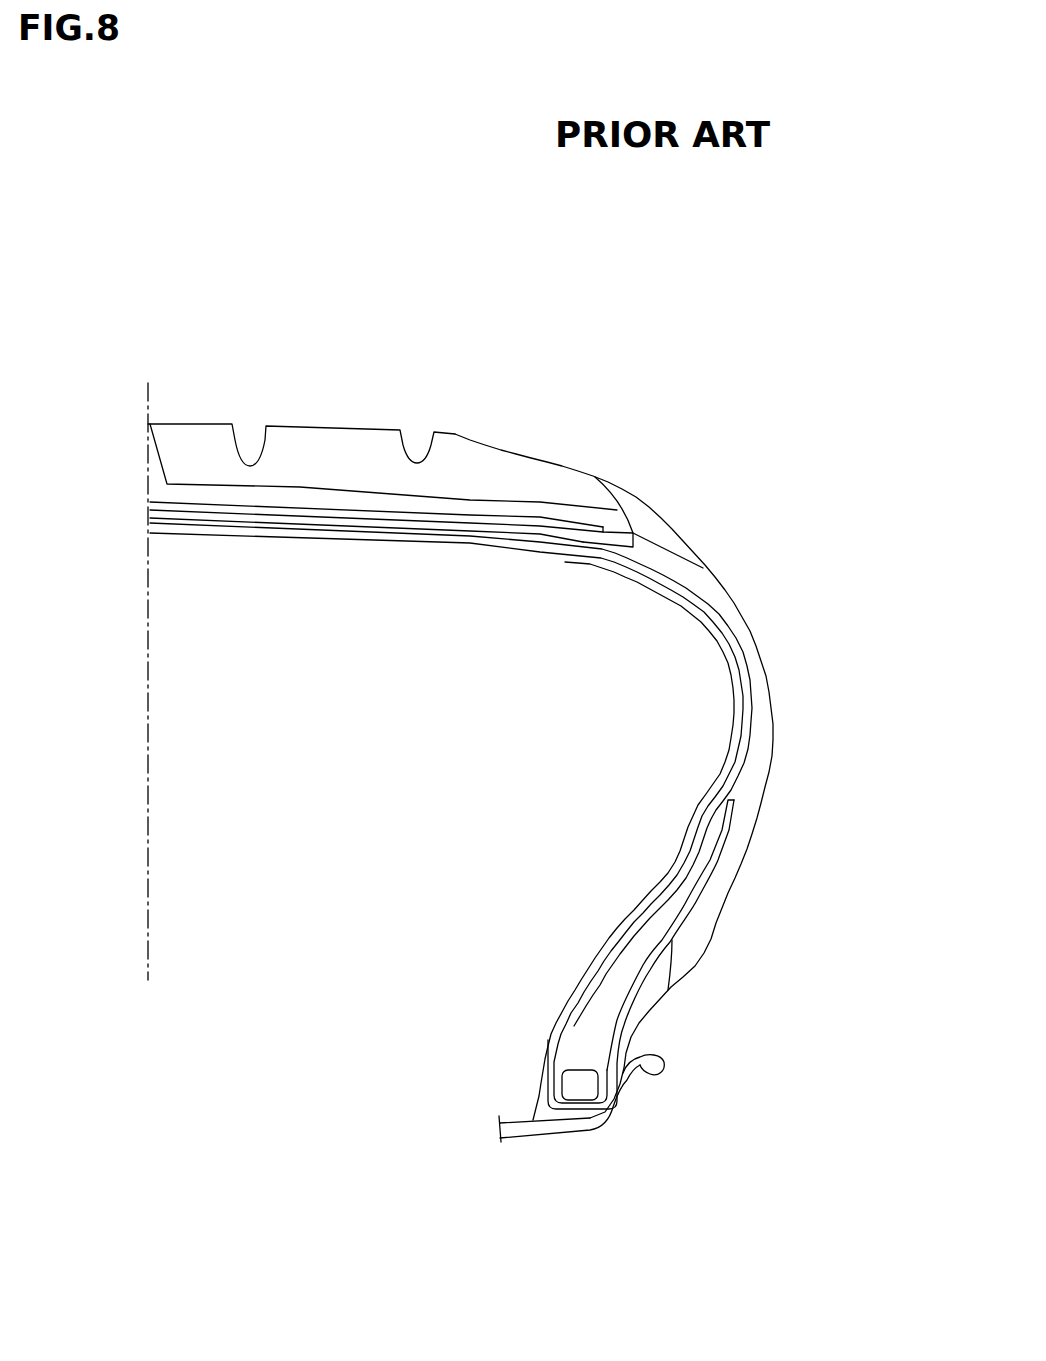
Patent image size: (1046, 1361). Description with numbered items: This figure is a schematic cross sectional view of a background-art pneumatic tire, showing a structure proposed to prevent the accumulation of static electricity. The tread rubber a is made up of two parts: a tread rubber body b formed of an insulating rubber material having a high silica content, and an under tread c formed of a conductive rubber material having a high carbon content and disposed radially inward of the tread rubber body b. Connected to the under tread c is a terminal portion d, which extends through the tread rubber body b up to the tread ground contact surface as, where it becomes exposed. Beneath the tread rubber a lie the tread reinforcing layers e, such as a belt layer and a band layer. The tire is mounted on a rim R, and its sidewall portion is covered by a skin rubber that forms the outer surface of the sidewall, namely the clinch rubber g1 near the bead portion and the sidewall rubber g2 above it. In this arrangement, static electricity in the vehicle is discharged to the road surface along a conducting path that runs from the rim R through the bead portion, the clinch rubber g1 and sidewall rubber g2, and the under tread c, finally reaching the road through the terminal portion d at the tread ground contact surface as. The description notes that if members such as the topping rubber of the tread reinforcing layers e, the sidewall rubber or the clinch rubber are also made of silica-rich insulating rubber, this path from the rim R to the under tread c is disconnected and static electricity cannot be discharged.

The tread rubber a is at (378, 300).
The tread rubber body b is at (305, 447).
The under tread c is at (372, 495).
The terminal portion d is at (158, 458).
The tread ground contact surface as is at (465, 438).
The tread reinforcing layers e is at (520, 520).
The clinch rubber g1 is at (653, 993).
The sidewall rubber g2 is at (735, 830).
The rim R is at (569, 1122).